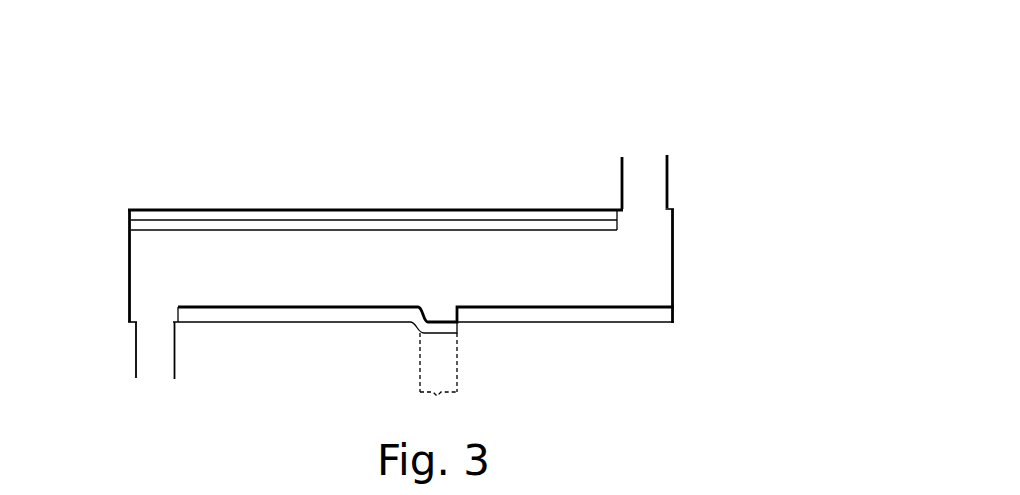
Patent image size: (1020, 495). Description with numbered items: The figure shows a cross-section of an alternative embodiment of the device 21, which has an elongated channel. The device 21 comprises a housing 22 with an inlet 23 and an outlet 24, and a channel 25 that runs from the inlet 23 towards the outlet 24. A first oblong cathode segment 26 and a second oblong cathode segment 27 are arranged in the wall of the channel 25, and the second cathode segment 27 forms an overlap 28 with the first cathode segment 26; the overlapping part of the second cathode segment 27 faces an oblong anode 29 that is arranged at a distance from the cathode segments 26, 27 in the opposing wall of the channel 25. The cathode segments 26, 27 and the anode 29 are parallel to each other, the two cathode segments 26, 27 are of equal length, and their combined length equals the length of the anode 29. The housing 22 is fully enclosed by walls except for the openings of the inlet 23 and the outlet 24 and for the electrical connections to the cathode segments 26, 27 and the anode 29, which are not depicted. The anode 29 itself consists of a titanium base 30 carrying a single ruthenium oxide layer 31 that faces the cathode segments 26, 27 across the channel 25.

The device 21 is at (425, 102).
The housing 22 is at (682, 264).
The inlet 23 is at (153, 359).
The outlet 24 is at (645, 172).
The channel 25 is at (432, 278).
The first oblong cathode segment 26 is at (288, 313).
The second oblong cathode segment 27 is at (567, 316).
The overlap 28 is at (438, 379).
The oblong anode 29 is at (128, 215).
The titanium base 30 is at (437, 212).
The ruthenium oxide layer 31 is at (518, 228).